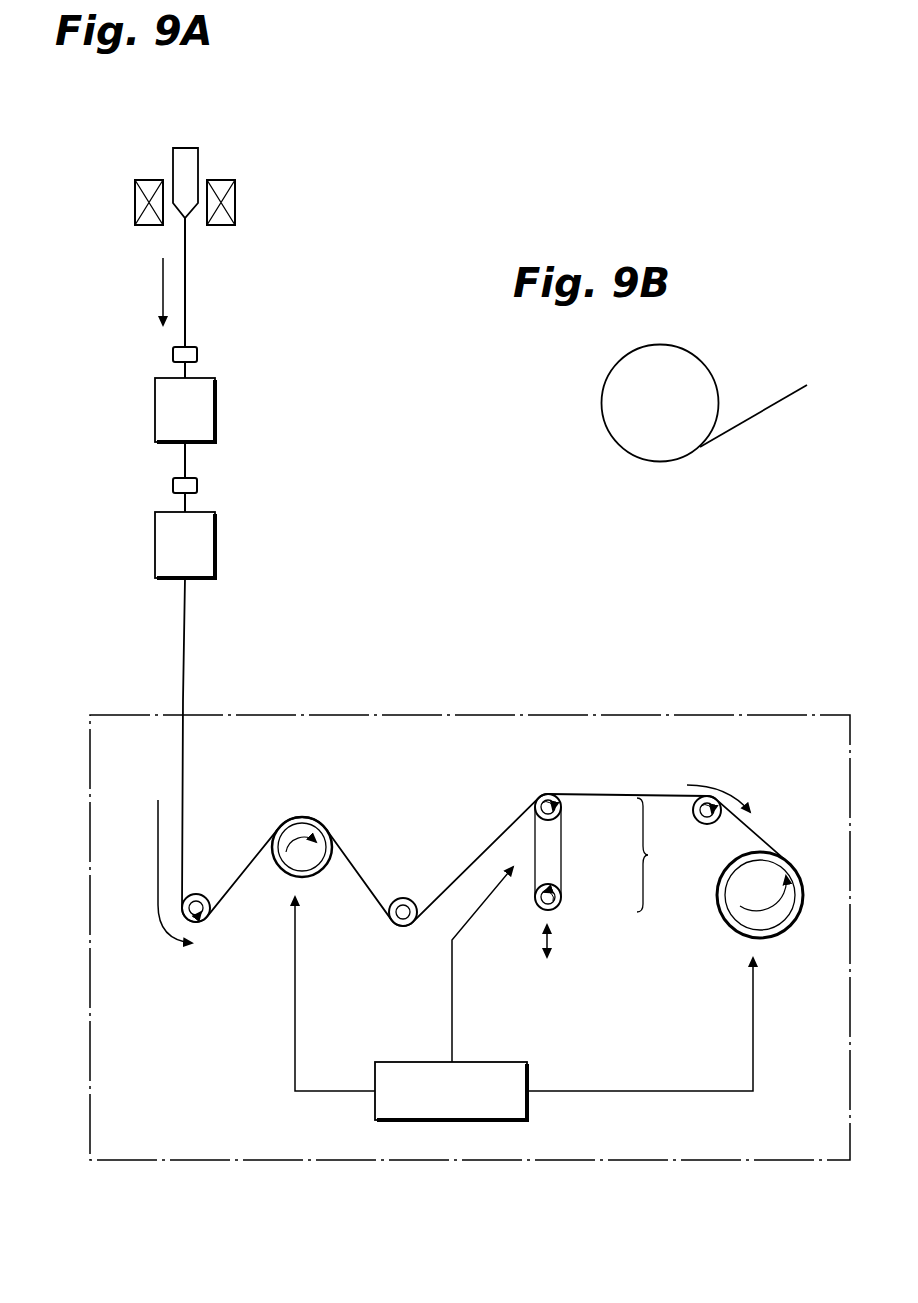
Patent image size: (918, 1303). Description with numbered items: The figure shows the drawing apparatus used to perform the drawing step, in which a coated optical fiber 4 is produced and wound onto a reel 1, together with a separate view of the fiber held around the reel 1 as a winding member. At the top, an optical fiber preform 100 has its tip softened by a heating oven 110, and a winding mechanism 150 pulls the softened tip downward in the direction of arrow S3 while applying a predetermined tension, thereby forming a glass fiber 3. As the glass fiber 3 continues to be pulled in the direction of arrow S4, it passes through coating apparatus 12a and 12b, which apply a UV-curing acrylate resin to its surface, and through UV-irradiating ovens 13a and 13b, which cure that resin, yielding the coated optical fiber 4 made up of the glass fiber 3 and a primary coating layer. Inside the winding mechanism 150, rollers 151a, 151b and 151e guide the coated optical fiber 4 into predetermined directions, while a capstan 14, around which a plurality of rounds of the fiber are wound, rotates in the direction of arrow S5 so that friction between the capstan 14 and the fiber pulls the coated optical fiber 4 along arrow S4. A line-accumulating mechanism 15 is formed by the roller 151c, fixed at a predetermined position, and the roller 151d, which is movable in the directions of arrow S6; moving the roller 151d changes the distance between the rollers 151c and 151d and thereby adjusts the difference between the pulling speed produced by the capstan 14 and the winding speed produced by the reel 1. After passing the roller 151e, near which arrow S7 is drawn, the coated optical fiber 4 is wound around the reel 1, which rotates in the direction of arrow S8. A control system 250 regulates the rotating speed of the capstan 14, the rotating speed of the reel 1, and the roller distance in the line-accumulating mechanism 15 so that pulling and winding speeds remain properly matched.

In FIG. 9A, the optical fiber preform 100 is at (188, 152).
In FIG. 9A, the heating oven 110 is at (237, 199).
In FIG. 9A, the glass fiber 3 is at (188, 298).
In FIG. 9A, the arrow S3 is at (163, 277).
In FIG. 9A, the coating apparatus 12a is at (200, 352).
In FIG. 9A, the UV-irradiating oven 13a is at (218, 412).
In FIG. 9A, the coating apparatus 12b is at (173, 485).
In FIG. 9A, the UV-irradiating oven 13b is at (218, 545).
In FIG. 9A, the coated optical fiber 4 is at (185, 651).
In FIG. 9B, the coated optical fiber 4 is at (757, 413).
In FIG. 9A, the winding mechanism 150 is at (722, 715).
In FIG. 9A, the arrow S4 is at (158, 852).
In FIG. 9A, the roller 151a is at (196, 893).
In FIG. 9A, the capstan 14 is at (310, 873).
In FIG. 9A, the arrow S5 is at (304, 820).
In FIG. 9A, the roller 151b is at (403, 898).
In FIG. 9A, the roller 151c is at (563, 806).
In FIG. 9A, the roller 151d is at (563, 895).
In FIG. 9A, the line-accumulating mechanism 15 is at (610, 855).
In FIG. 9A, the arrow S6 is at (552, 942).
In FIG. 9A, the roller 151e is at (722, 820).
In FIG. 9A, the arrow S7 is at (722, 790).
In FIG. 9A, the reel 1 is at (732, 898).
In FIG. 9B, the reel 1 is at (612, 395).
In FIG. 9A, the arrow S8 is at (785, 922).
In FIG. 9A, the control system 250 is at (507, 1062).